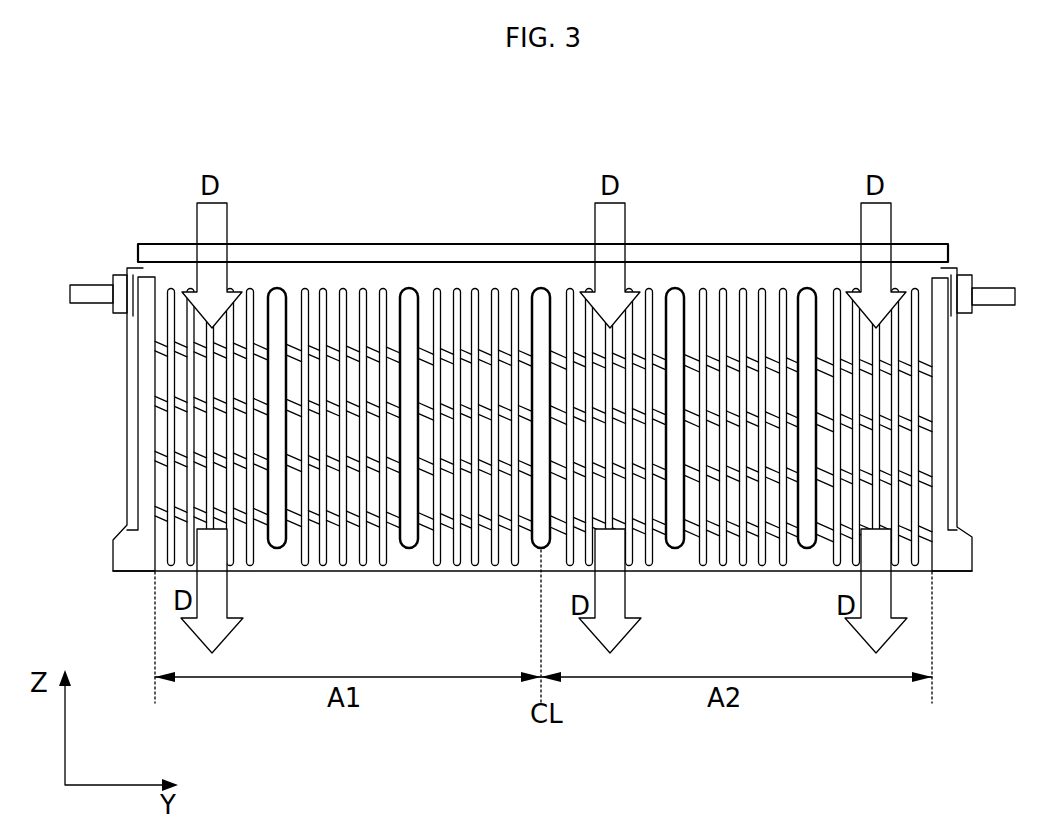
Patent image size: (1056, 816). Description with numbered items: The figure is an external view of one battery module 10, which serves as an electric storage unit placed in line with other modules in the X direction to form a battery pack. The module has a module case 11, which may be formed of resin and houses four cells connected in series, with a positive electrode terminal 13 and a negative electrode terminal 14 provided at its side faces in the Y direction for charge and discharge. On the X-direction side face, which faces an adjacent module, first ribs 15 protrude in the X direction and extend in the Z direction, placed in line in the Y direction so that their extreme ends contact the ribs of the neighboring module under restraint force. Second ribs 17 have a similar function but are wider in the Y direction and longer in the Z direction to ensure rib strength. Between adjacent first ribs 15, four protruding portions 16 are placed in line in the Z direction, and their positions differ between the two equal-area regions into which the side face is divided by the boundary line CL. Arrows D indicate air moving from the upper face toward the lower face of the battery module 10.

The battery module 10 is at (470, 215).
The module case 11 is at (274, 243).
The positive electrode terminal 13 is at (88, 295).
The negative electrode terminal 14 is at (998, 296).
The first rib 15 is at (170, 330).
The protruding portion 16 is at (165, 350).
The second rib 17 is at (279, 300).